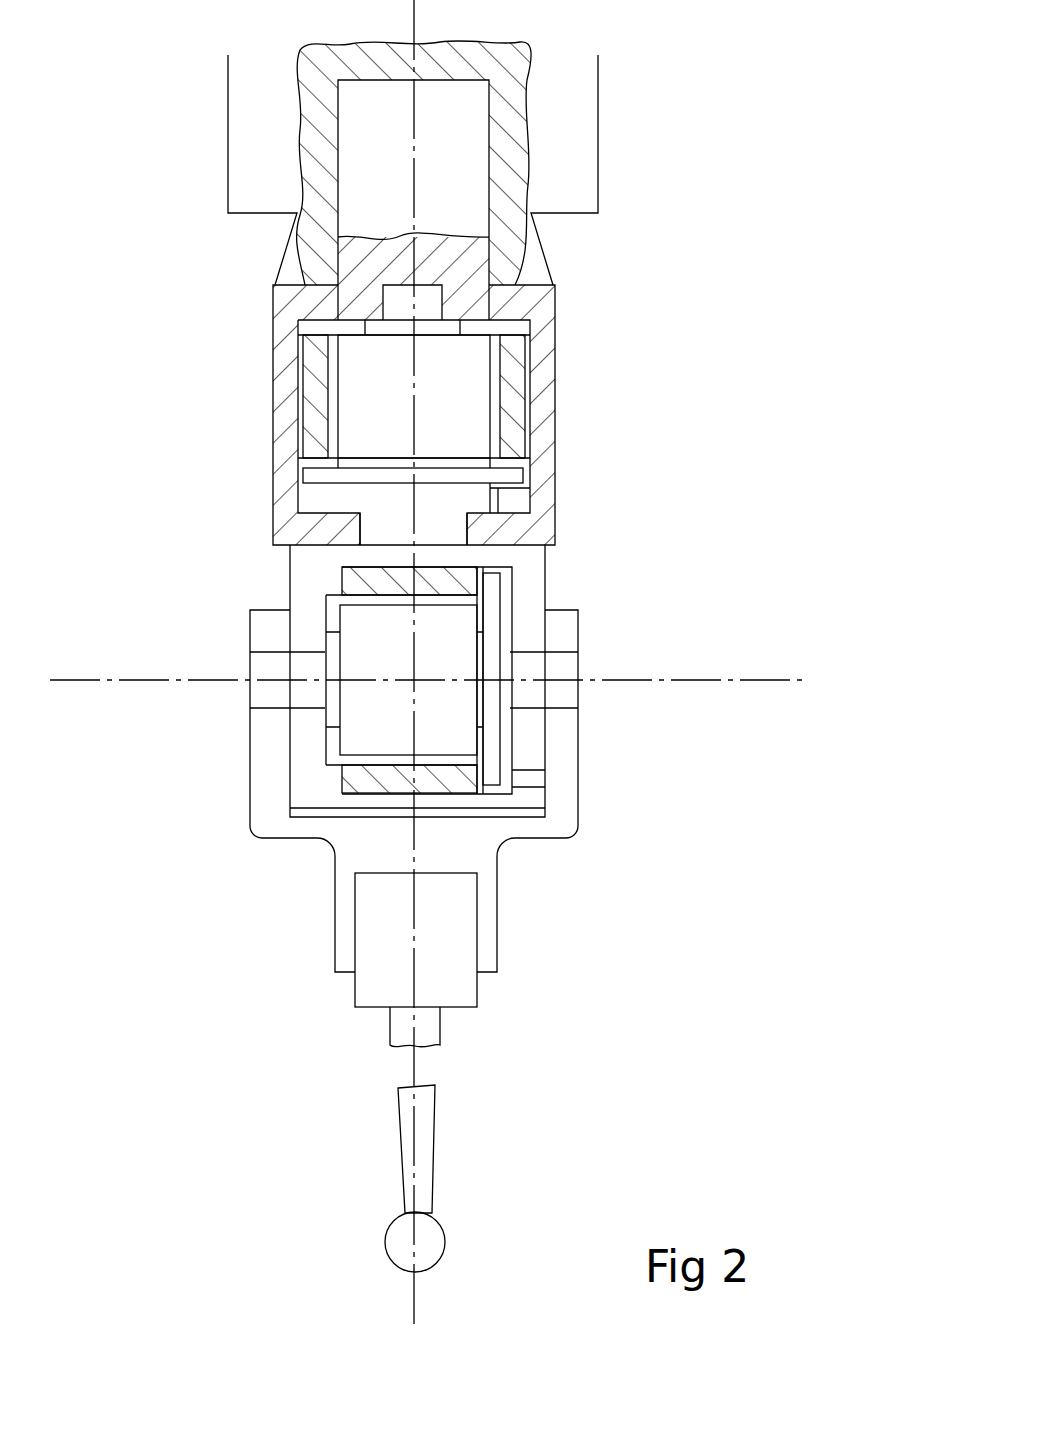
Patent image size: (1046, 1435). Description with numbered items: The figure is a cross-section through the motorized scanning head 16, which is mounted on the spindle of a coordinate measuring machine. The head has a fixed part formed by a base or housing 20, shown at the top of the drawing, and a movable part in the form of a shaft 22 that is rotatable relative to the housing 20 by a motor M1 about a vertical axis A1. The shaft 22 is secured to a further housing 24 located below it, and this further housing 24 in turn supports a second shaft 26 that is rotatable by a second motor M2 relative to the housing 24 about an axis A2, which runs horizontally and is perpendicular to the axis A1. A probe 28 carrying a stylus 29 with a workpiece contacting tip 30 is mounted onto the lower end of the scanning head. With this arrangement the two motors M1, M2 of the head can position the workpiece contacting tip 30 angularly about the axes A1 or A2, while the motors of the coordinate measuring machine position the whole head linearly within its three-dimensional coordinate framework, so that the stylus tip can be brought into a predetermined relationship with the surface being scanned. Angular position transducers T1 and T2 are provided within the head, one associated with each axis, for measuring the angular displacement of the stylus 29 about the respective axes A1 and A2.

The motorized scanning head 16 is at (713, 335).
The housing 20 is at (273, 403).
The shaft 22 is at (387, 528).
The further housing 24 is at (546, 573).
The shaft 26 is at (530, 710).
The probe 28 is at (477, 923).
The stylus 29 is at (433, 1153).
The workpiece contacting tip 30 is at (385, 1242).
The motor M1 is at (470, 392).
The motor M2 is at (370, 727).
The angular position transducer T1 is at (303, 478).
The angular position transducer T2 is at (493, 768).
The axis A1 is at (462, 678).
The axis A2 is at (465, 706).